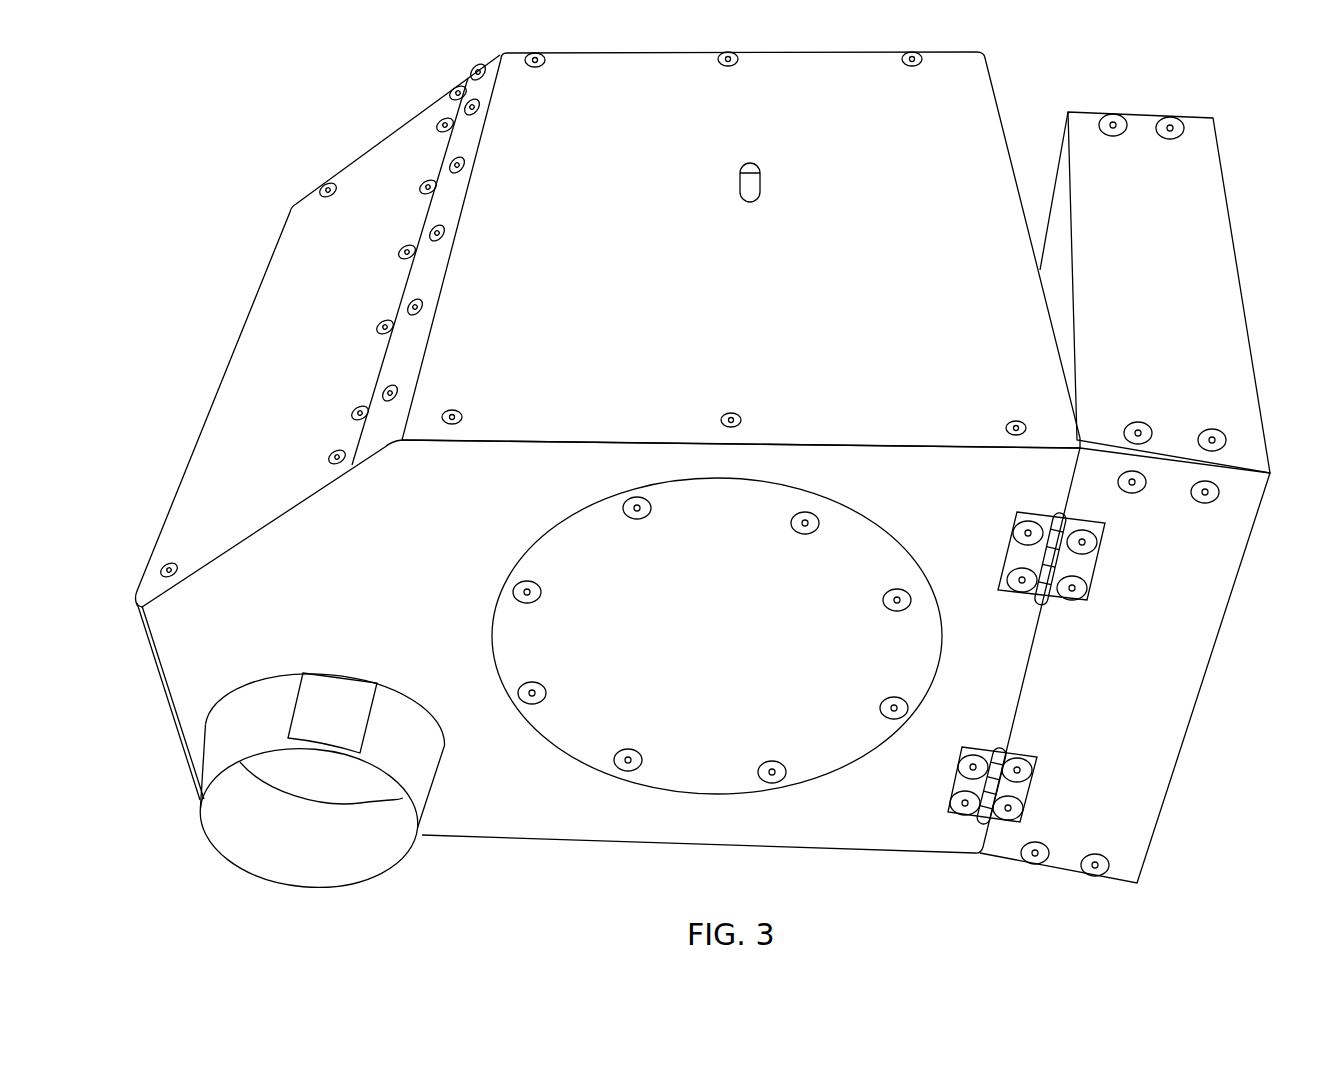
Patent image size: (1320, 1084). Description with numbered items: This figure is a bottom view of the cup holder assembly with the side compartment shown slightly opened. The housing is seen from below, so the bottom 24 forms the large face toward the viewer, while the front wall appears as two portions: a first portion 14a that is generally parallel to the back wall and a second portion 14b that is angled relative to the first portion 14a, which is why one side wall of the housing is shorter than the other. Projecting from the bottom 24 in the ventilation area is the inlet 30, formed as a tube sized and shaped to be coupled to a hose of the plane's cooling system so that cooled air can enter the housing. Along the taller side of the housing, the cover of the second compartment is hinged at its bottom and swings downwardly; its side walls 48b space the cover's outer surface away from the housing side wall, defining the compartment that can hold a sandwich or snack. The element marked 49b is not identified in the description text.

The first portion of the front wall 14a is at (746, 293).
The second portion of the front wall 14b is at (327, 395).
The bottom 24 is at (731, 646).
The inlet 30 is at (432, 758).
The side walls of the cover 48b is at (1223, 295).
The slot 49b is at (788, 190).